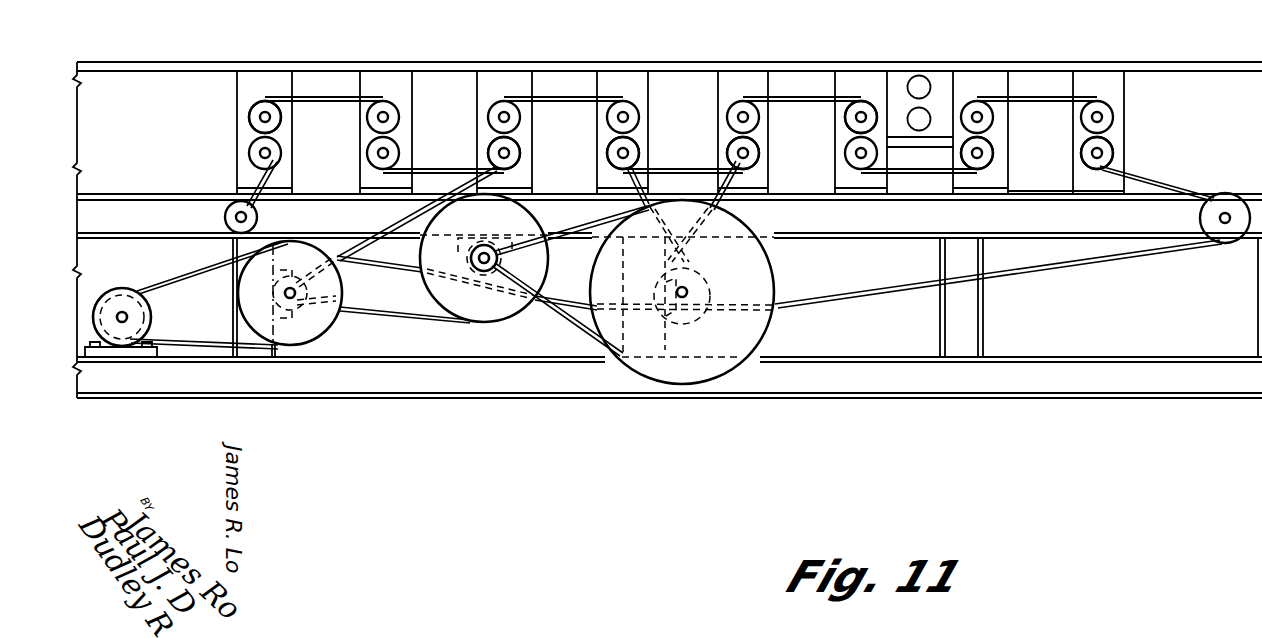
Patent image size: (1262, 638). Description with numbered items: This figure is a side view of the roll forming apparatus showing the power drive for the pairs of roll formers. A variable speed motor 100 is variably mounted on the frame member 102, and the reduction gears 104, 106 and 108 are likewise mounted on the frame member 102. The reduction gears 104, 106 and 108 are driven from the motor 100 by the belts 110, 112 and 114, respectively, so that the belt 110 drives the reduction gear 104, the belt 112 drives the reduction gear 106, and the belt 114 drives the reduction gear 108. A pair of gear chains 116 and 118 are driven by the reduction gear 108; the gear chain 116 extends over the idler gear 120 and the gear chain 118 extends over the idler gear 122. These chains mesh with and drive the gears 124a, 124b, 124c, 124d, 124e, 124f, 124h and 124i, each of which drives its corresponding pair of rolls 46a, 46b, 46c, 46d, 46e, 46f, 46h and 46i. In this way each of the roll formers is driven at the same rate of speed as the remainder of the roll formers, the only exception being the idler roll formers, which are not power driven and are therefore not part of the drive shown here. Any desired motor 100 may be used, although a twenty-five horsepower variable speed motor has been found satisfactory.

The pair of rolls 46a is at (1113, 123).
The pair of rolls 46b is at (995, 120).
The pair of rolls 46c is at (846, 116).
The pair of rolls 46d is at (733, 143).
The pair of rolls 46e is at (606, 116).
The pair of rolls 46f is at (488, 145).
The pair of rolls 46h is at (367, 153).
The pair of rolls 46i is at (250, 152).
The gear 124a is at (1113, 112).
The gear 124b is at (995, 155).
The gear 124c is at (862, 100).
The gear 124d is at (759, 155).
The gear 124e is at (641, 155).
The gear 124f is at (522, 153).
The gear 124h is at (399, 111).
The gear 124i is at (282, 117).
The variable speed motor 100 is at (140, 311).
The frame member 102 is at (1100, 224).
The reduction gear 104 is at (330, 293).
The reduction gear 106 is at (542, 257).
The reduction gear 108 is at (778, 276).
The belt 110 is at (197, 264).
The belt 112 is at (433, 322).
The belt 114 is at (566, 331).
The gear chain 116 is at (1074, 262).
The gear chain 118 is at (329, 248).
The idler gear 120 is at (1227, 194).
The idler gear 122 is at (225, 218).